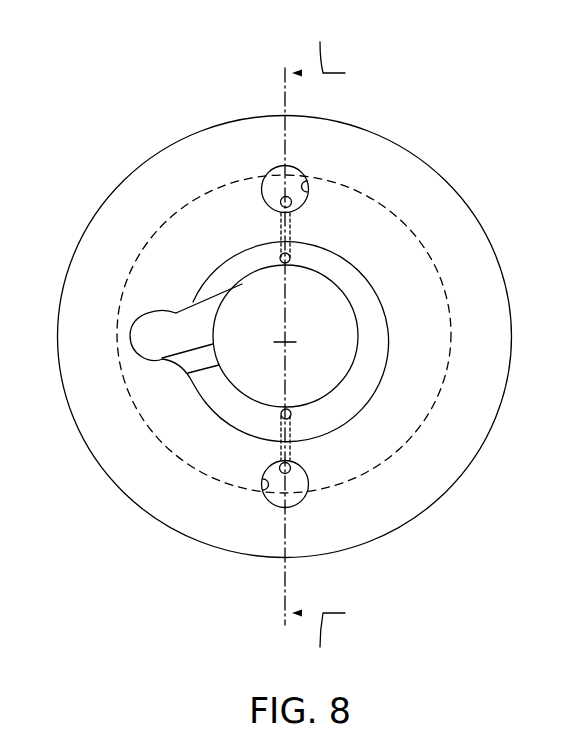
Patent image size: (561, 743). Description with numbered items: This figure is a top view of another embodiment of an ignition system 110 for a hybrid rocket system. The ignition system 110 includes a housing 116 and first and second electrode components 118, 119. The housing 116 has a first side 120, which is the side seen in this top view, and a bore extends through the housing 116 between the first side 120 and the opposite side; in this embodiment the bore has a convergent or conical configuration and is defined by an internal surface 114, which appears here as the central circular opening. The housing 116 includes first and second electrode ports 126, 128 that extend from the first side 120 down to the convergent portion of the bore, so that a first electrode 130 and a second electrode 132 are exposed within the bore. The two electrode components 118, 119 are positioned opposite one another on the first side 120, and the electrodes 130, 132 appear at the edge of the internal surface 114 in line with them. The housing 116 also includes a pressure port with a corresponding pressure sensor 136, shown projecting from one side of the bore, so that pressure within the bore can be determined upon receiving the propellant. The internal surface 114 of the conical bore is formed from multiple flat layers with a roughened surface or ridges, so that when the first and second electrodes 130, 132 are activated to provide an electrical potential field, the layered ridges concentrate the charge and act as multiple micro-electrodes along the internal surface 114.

The ignition system 110 is at (424, 78).
The internal surface 114 is at (363, 295).
The housing 116 is at (133, 163).
The first electrode component 118 is at (300, 166).
The second electrode component 119 is at (312, 477).
The first side 120 is at (440, 203).
The first electrode port 126 is at (309, 188).
The second electrode port 128 is at (267, 493).
The first electrode 130 is at (290, 258).
The second electrode 132 is at (162, 348).
The pressure sensor 136 is at (188, 307).